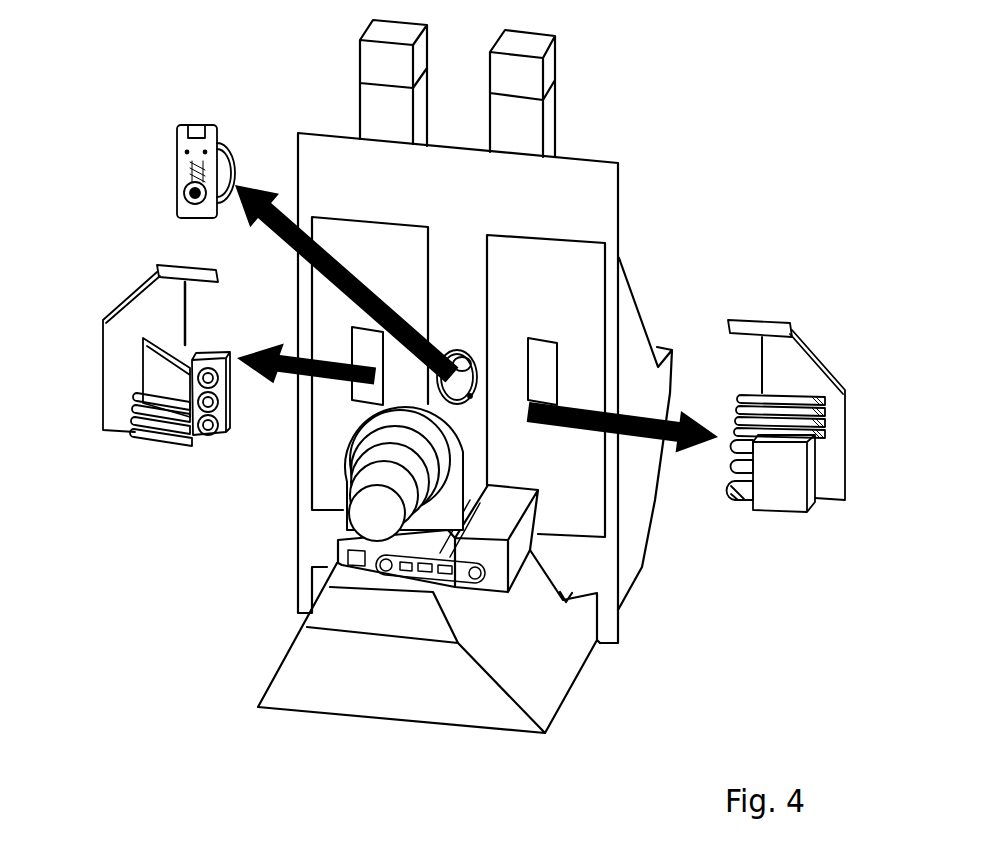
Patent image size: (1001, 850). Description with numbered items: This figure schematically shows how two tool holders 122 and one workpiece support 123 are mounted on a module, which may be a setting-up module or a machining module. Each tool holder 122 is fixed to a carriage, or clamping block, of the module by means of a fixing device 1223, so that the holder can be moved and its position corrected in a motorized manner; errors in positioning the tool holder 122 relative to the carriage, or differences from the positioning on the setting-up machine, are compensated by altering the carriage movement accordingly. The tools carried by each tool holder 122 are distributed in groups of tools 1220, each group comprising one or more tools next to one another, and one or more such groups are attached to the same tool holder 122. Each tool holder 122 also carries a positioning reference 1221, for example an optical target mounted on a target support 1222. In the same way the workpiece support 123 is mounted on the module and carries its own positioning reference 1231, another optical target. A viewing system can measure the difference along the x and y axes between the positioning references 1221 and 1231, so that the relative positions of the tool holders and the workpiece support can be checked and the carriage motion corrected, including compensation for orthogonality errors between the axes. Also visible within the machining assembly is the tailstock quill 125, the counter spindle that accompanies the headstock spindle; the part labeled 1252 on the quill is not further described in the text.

The tool holder 122 is at (466, 360).
The group of tools 1220 is at (200, 430).
The positioning reference 1221 is at (180, 270).
The target support 1222 is at (127, 357).
The fixing device 1223 is at (365, 397).
The workpiece support 123 is at (177, 111).
The positioning reference 1231 is at (195, 125).
The tailstock quill 125 is at (370, 510).
The holder ring 1252 is at (466, 354).